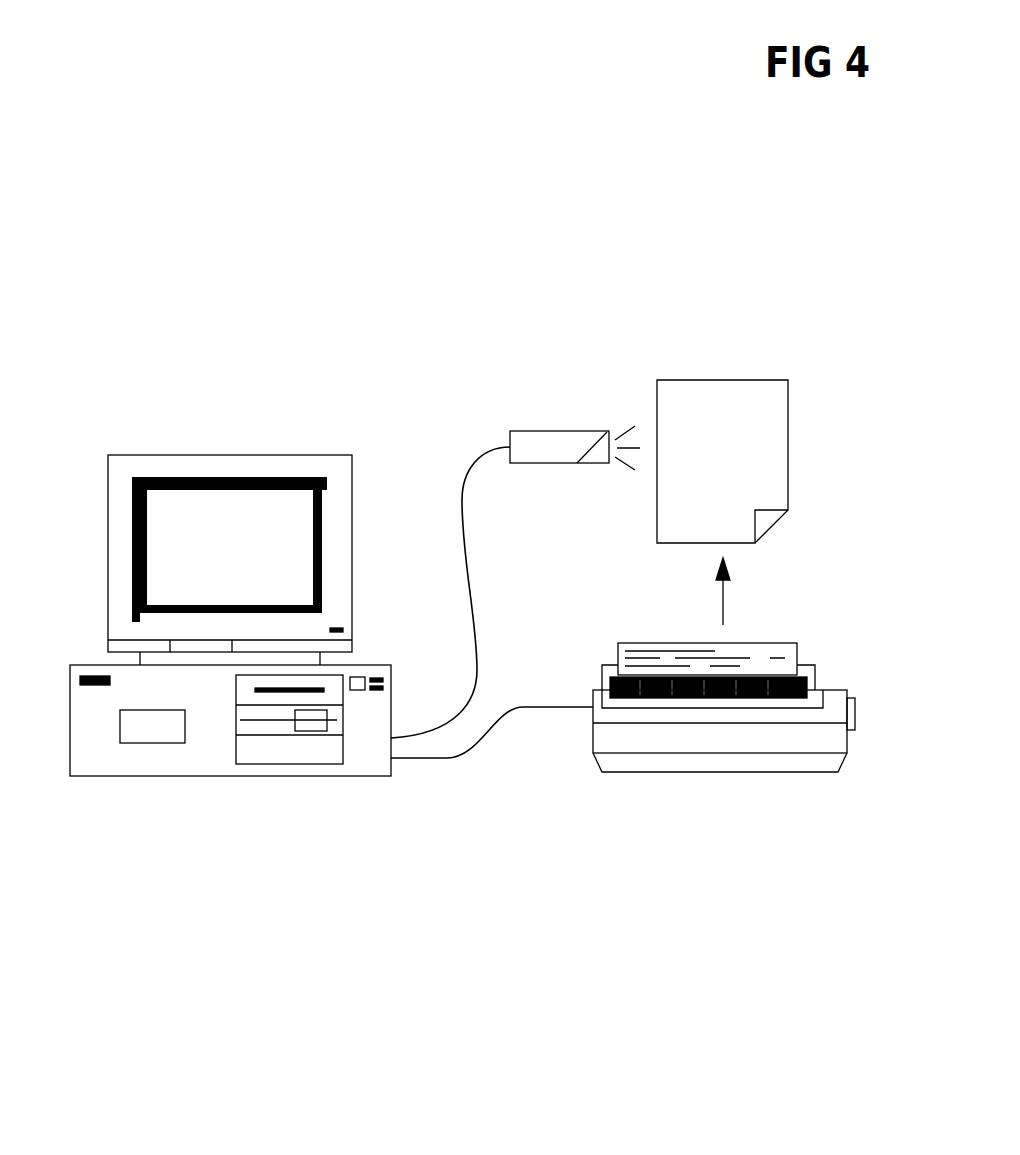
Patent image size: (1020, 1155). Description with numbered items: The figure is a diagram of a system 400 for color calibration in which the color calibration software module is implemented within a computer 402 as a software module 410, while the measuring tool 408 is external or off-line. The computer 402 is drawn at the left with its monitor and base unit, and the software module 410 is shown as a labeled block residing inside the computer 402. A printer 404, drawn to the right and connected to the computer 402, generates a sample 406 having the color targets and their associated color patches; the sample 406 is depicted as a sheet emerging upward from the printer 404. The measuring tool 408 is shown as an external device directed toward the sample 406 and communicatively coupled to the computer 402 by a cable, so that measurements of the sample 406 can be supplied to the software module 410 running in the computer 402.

The system 400 is at (503, 953).
The computer 402 is at (268, 776).
The printer 404 is at (725, 772).
The sample 406 is at (712, 380).
The measuring tool 408 is at (562, 431).
The software module 410 is at (178, 743).